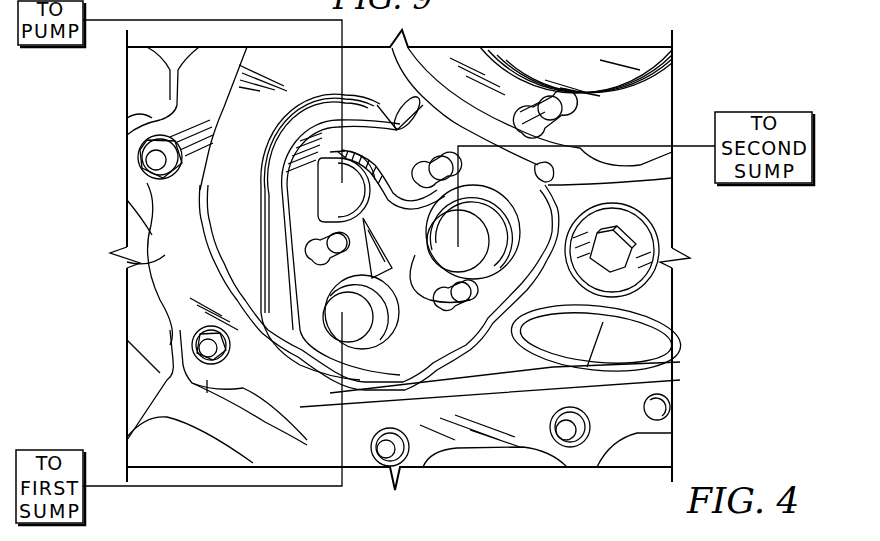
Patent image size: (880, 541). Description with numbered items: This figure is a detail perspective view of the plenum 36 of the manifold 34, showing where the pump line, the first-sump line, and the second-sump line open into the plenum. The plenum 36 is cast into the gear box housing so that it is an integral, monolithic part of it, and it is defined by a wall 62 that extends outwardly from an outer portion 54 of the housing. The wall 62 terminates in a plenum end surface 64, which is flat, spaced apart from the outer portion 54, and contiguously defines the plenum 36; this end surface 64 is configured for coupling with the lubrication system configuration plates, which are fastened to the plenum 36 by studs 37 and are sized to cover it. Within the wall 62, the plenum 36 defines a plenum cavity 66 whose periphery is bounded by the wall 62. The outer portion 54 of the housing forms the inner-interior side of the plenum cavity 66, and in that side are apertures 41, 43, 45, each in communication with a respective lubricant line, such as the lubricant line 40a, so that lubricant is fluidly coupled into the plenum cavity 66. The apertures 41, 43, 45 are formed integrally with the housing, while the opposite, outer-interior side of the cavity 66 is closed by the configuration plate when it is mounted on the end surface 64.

The manifold 34 is at (478, 352).
The plenum 36 is at (255, 127).
The studs 37 is at (445, 152).
The lubricant line 40a is at (321, 181).
The aperture 41 is at (328, 201).
The aperture 43 is at (360, 335).
The aperture 45 is at (657, 201).
The outer portion of the housing 54 is at (228, 275).
The wall 62 is at (305, 136).
The plenum end surface 64 is at (325, 108).
The plenum cavity 66 is at (381, 197).